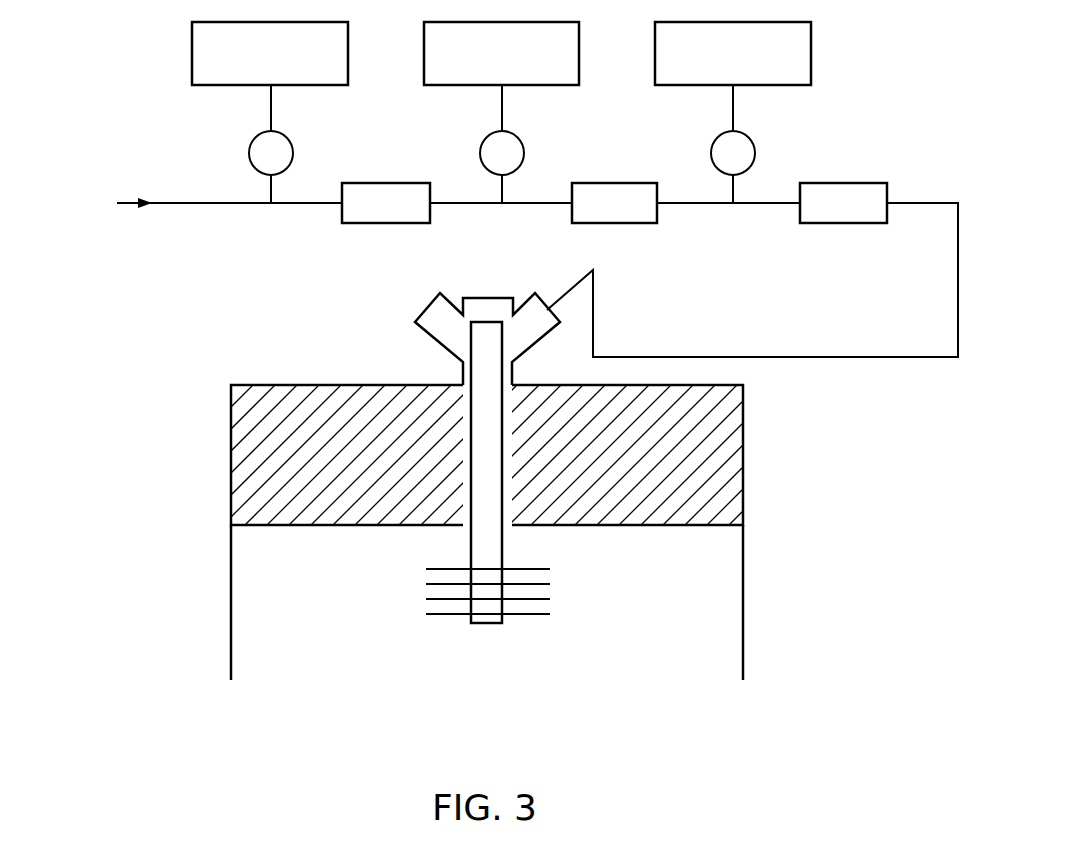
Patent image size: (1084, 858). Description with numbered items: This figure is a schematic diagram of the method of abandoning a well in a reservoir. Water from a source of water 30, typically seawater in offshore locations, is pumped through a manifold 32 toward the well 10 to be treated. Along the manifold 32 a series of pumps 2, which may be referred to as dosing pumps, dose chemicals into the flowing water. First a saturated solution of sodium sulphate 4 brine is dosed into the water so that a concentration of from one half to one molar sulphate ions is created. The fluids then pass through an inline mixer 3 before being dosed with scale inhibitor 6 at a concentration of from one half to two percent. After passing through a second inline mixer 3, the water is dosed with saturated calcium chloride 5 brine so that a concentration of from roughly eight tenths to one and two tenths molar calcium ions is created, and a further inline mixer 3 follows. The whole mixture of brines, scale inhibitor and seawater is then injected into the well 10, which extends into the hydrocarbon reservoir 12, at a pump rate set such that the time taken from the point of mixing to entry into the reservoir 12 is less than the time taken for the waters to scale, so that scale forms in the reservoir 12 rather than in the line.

The pumps 2 is at (278, 166).
The inline mixer 3 is at (393, 217).
The sodium sulphate 4 is at (279, 68).
The calcium chloride 5 is at (741, 68).
The scale inhibitor 6 is at (510, 68).
The well 10 is at (512, 507).
The hydrocarbon reservoir 12 is at (600, 649).
The source of water 30 is at (102, 205).
The manifold 32 is at (222, 208).